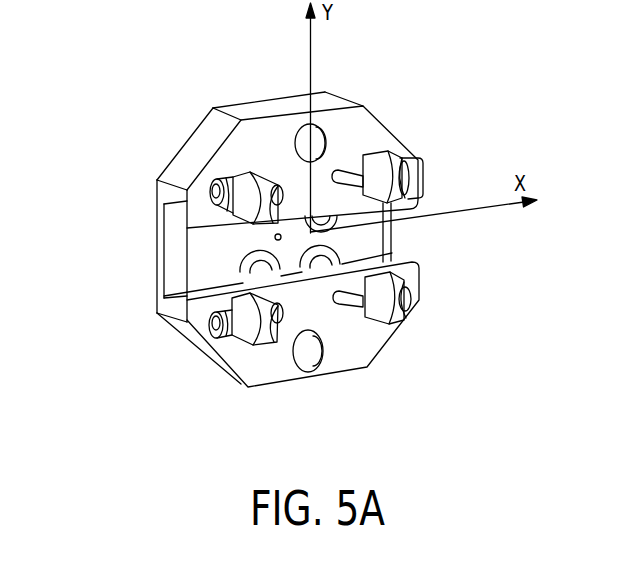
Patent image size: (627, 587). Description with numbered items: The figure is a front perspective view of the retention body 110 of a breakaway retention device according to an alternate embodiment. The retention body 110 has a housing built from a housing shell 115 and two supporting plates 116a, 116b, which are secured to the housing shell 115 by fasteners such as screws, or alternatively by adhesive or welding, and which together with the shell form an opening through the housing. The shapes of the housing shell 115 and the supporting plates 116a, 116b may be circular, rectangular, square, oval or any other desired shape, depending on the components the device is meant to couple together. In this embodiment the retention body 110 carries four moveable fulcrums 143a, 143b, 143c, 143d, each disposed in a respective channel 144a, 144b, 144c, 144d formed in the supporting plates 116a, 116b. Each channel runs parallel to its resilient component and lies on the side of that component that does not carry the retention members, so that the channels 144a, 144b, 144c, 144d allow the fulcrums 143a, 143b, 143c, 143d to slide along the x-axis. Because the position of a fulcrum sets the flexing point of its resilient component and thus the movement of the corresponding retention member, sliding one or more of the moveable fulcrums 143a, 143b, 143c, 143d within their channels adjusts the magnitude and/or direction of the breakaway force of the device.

The retention body 110 is at (364, 106).
The housing shell 115 is at (202, 144).
The supporting plate 116a is at (381, 118).
The supporting plate 116b is at (418, 261).
The moveable fulcrum 143a is at (300, 213).
The moveable fulcrum 143b is at (408, 158).
The moveable fulcrum 143c is at (252, 333).
The moveable fulcrum 143d is at (407, 320).
The channel 144a is at (279, 190).
The channel 144b is at (363, 176).
The channel 144c is at (278, 316).
The channel 144d is at (357, 307).